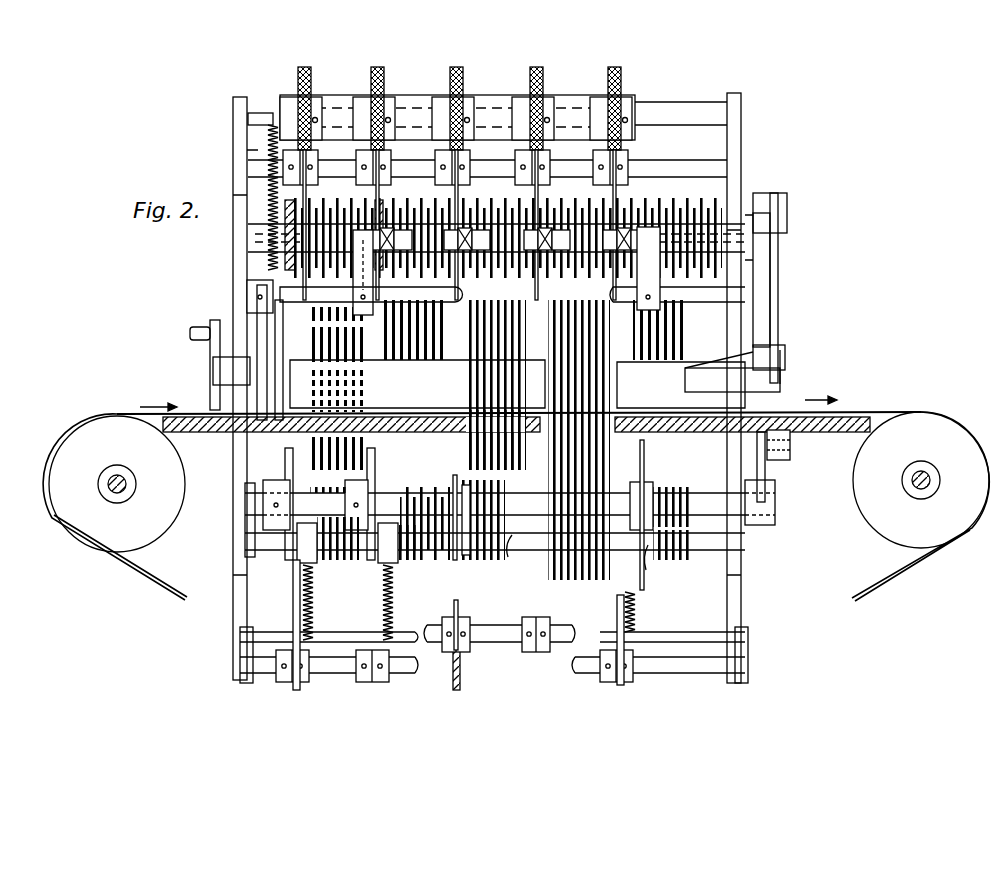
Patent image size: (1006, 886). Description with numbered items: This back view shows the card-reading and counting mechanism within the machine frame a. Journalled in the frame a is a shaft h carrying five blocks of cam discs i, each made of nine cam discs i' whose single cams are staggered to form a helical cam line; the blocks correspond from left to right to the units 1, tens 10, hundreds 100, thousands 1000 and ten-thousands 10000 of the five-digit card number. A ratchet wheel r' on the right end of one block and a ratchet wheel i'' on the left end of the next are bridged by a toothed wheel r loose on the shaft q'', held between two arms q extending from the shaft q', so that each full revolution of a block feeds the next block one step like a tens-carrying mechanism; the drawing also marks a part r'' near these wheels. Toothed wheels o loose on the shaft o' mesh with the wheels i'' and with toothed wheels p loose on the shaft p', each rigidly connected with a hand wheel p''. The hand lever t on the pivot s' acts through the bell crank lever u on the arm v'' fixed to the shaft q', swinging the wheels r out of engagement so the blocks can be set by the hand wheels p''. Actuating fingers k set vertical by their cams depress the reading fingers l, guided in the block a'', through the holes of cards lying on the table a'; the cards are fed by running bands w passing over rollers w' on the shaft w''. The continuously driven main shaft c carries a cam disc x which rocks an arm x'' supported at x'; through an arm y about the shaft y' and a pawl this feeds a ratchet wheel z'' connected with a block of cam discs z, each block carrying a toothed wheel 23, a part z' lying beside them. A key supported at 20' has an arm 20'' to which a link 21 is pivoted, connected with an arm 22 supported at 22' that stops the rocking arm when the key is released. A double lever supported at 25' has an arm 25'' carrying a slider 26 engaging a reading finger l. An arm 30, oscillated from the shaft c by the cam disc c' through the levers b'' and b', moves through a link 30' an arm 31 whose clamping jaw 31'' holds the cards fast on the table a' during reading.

The machine frame a is at (488, 388).
The table a' is at (516, 440).
The block a'' is at (517, 371).
The lever b' is at (805, 288).
The lever b'' is at (787, 466).
The main shaft c is at (495, 513).
The cam disc c' is at (773, 499).
The shaft h is at (246, 242).
The block of cam discs i is at (507, 228).
The cam disc i' is at (317, 236).
The ratchet wheel i'' is at (346, 224).
The actuating finger k is at (545, 300).
The reading finger l is at (640, 333).
The toothed wheel o is at (269, 191).
The shaft o' is at (486, 146).
The toothed wheel p is at (448, 100).
The shaft p' is at (681, 100).
The hand wheel p'' is at (472, 168).
The arm q is at (512, 283).
The shaft q' is at (561, 277).
The shaft q'' is at (394, 283).
The toothed wheel r is at (381, 247).
The ratchet wheel r' is at (373, 325).
The slide r'' is at (552, 294).
The pivot s' is at (218, 371).
The hand lever t is at (360, 562).
The bell crank lever u is at (284, 336).
The arm v'' is at (260, 350).
The running band w is at (516, 496).
The roller w' is at (519, 479).
The shaft w'' is at (534, 482).
The cam disc x is at (326, 504).
The support x' is at (495, 557).
The arm x'' is at (358, 550).
The arm y is at (451, 504).
The shaft y' is at (587, 560).
The block of cam discs z is at (424, 514).
The wheel z' is at (429, 476).
The ratchet wheel z'' is at (478, 517).
The units scale 1 is at (338, 182).
The tens scale 10 is at (412, 182).
The electromagnetic coupling device 100 is at (497, 182).
The thousands scale 1000 is at (582, 182).
The ten-thousands scale 10000 is at (676, 182).
The key support 20' is at (499, 625).
The key arm 20'' is at (443, 641).
The link 21 is at (462, 672).
The arm 22 is at (492, 603).
The support 22' is at (492, 672).
The toothed wheel 23 is at (470, 560).
The support 25' is at (666, 515).
The arm 25'' is at (497, 451).
The slider 26 is at (556, 320).
The arm 30 is at (766, 214).
The link 30' is at (788, 280).
The arm 31 is at (780, 346).
The clamping jaw 31'' is at (759, 371).